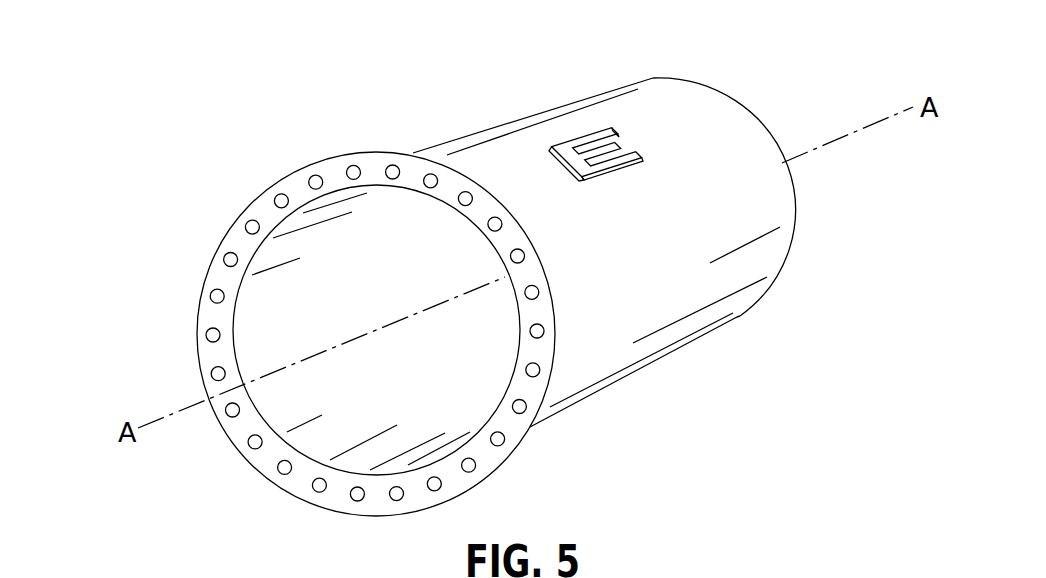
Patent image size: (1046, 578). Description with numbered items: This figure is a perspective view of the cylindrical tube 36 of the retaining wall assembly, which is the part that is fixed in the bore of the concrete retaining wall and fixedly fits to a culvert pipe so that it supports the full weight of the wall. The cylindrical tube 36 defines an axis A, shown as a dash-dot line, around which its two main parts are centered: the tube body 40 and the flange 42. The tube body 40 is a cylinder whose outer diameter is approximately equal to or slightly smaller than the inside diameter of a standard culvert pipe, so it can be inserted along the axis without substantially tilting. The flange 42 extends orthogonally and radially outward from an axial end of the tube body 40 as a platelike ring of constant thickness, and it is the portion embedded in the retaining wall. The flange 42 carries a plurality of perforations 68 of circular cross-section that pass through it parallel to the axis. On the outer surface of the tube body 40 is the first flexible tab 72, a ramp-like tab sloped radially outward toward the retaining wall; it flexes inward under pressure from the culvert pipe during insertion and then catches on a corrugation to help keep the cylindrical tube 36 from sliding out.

The cylindrical tube 36 is at (229, 103).
The tube body 40 is at (507, 125).
The flange 42 is at (352, 152).
The perforations 68 is at (223, 262).
The first flexible tab 72 is at (600, 172).